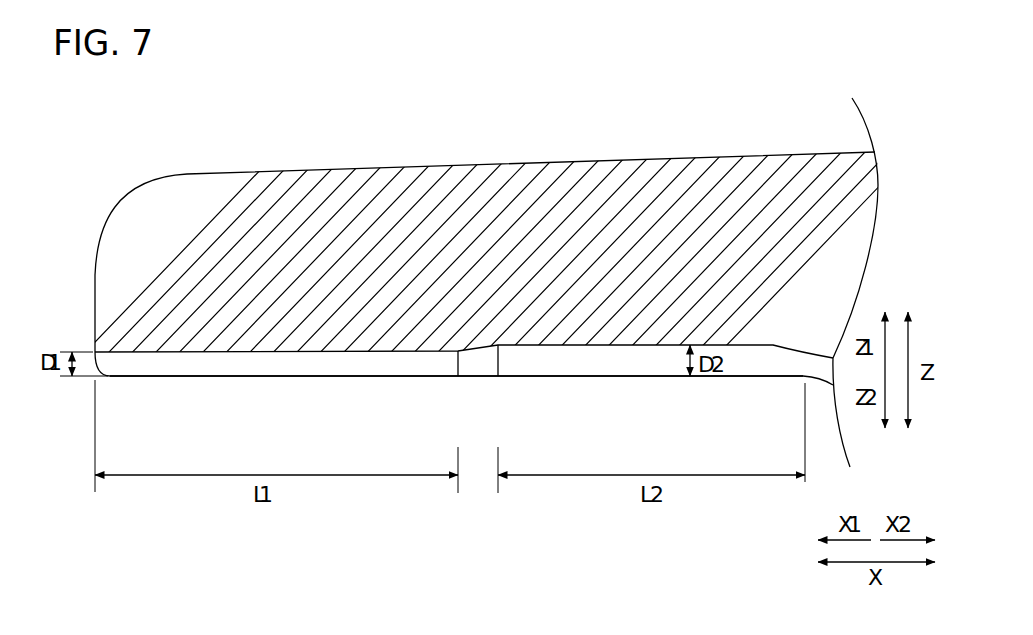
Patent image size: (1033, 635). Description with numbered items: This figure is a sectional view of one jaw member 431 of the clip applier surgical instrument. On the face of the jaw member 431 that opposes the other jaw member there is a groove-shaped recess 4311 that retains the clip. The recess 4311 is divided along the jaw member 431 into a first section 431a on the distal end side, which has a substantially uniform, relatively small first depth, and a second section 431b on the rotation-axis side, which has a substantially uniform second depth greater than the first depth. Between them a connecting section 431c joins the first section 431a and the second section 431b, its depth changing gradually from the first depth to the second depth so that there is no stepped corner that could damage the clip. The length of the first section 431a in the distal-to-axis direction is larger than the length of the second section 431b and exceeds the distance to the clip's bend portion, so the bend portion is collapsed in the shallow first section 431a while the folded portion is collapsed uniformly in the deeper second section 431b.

The jaw member 431 is at (524, 163).
The first section 431a is at (259, 368).
The second section 431b is at (645, 362).
The connecting section 431c is at (471, 362).
The groove-shaped recess 4311 is at (388, 366).